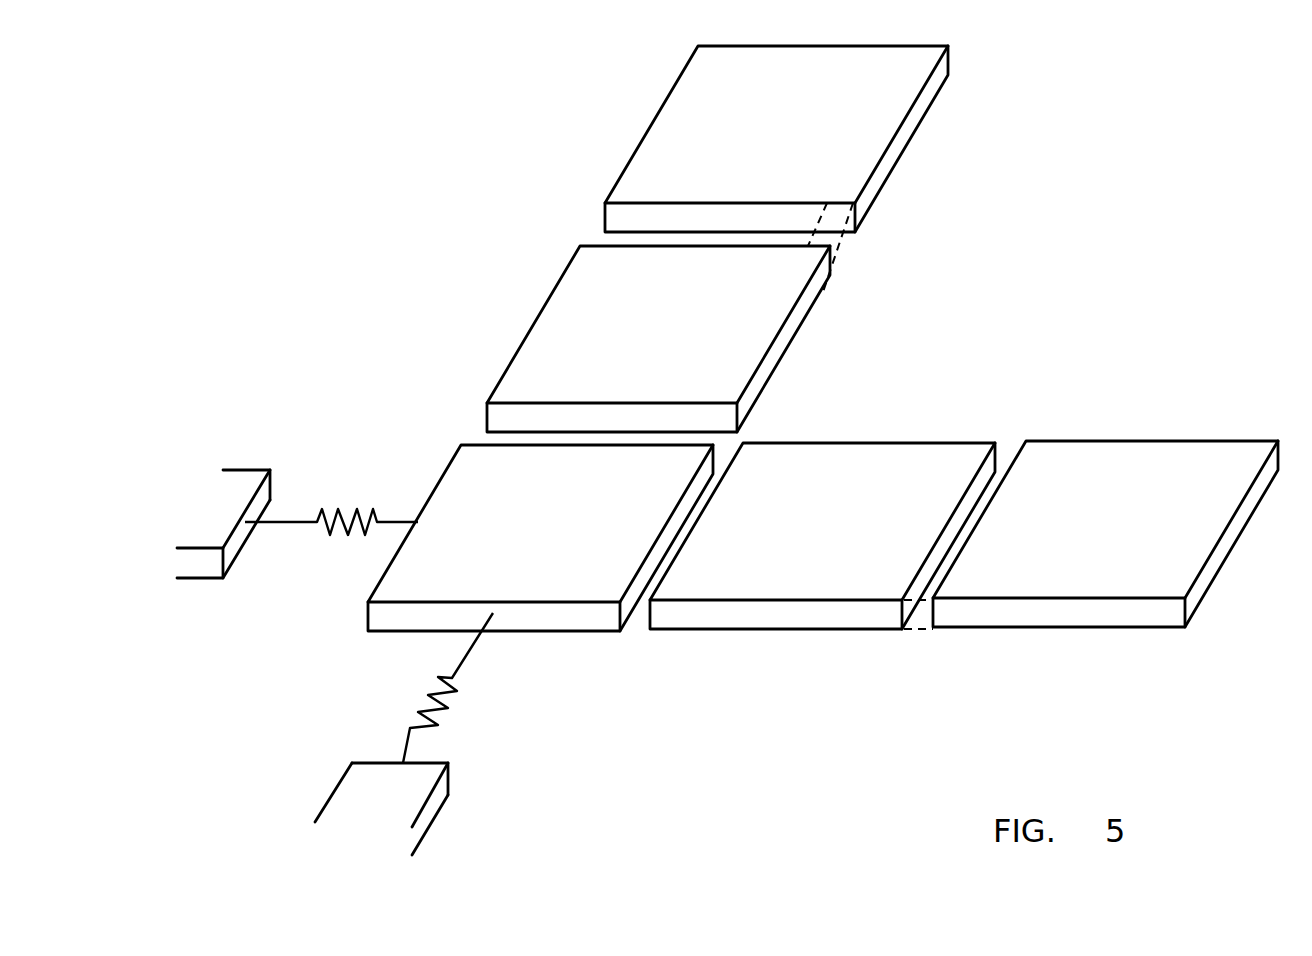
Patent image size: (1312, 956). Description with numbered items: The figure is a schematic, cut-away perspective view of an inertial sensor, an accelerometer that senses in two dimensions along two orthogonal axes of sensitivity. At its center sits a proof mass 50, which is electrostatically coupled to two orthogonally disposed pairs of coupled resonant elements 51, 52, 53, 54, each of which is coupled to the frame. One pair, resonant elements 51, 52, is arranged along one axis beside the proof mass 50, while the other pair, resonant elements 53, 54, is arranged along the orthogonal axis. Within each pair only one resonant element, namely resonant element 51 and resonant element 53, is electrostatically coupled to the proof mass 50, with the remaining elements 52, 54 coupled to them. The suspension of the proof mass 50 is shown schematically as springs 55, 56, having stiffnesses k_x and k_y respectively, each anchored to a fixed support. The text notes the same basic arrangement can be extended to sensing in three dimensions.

The proof mass 50 is at (568, 613).
The resonant element 51 is at (857, 502).
The resonant element 52 is at (1140, 498).
The resonant element 53 is at (712, 327).
The resonant element 54 is at (828, 128).
The spring 55 is at (338, 525).
The spring 56 is at (448, 700).